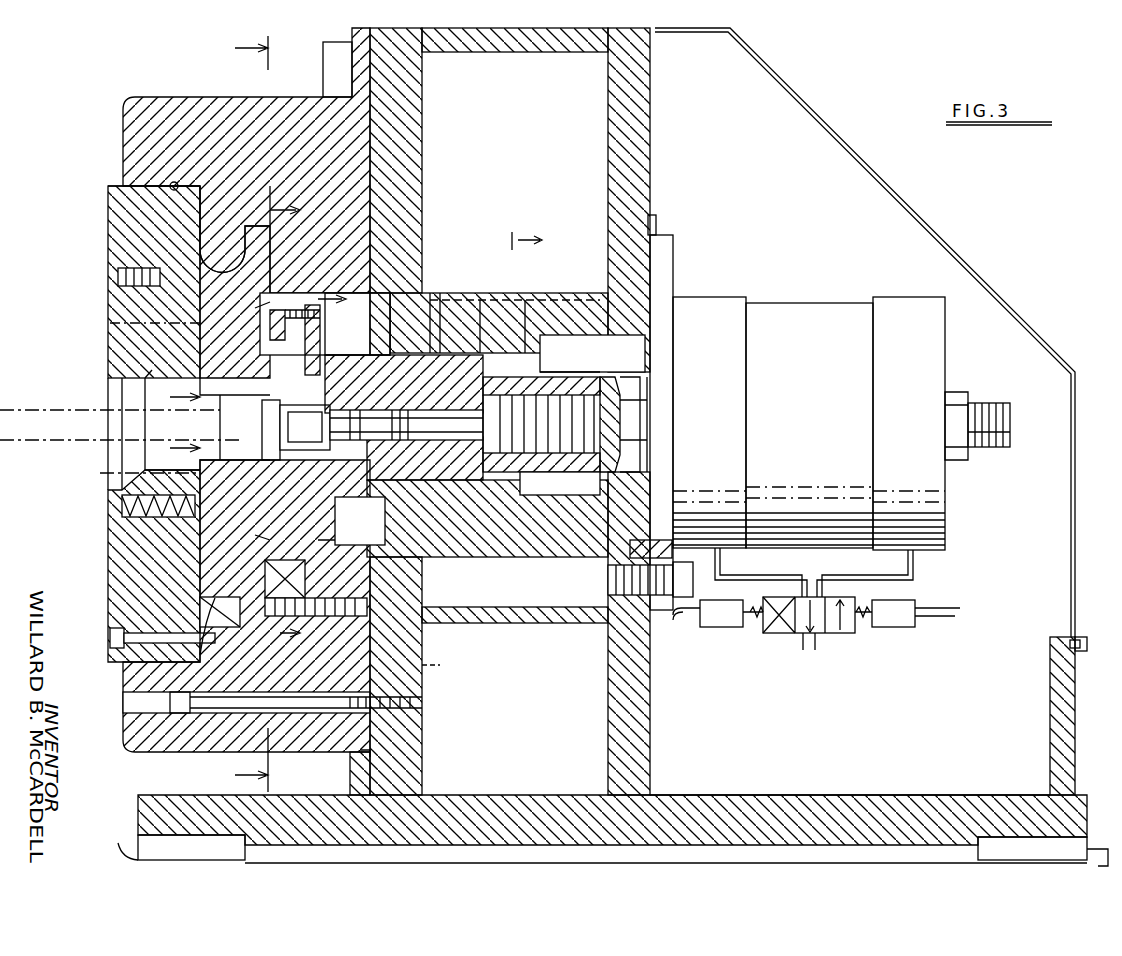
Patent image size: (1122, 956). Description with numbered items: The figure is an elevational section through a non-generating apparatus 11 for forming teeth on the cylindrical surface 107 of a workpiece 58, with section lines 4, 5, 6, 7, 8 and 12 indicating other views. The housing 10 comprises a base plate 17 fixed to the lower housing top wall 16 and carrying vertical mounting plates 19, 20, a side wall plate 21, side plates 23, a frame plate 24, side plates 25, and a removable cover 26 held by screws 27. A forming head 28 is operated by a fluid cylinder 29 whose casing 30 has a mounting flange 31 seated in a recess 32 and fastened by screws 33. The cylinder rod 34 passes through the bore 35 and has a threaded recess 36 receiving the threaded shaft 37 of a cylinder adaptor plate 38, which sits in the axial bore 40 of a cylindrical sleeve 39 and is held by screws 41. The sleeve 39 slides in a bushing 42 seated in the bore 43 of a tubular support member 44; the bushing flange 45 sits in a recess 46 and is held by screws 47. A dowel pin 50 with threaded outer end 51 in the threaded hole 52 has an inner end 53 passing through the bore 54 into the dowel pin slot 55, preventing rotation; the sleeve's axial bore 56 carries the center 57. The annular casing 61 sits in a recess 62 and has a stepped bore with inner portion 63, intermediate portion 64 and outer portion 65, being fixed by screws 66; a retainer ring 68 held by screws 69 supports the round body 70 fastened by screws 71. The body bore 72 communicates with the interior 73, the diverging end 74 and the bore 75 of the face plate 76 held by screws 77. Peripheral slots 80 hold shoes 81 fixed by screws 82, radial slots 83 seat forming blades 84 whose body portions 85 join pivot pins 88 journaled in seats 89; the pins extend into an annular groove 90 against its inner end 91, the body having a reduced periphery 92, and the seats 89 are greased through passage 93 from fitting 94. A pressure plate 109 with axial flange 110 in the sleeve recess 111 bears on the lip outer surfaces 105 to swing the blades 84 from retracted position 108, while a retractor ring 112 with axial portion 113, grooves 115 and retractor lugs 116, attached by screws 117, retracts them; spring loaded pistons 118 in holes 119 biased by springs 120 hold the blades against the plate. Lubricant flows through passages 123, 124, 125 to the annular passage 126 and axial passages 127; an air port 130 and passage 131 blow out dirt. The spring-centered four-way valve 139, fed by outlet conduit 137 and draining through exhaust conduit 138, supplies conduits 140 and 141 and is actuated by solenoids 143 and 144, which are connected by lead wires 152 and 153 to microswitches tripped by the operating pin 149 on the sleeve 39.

The section line 4- 4 is at (236, 414).
The section line 5- 5 is at (292, 422).
The section line 6- 6 is at (337, 419).
The section line 7- 7 is at (255, 419).
The section line 8- 8 is at (330, 442).
The housing 10 is at (130, 815).
The non-generating apparatus 11 is at (113, 147).
The section line 12- 12 is at (212, 424).
The lower housing portion top wall 16 is at (118, 845).
The base plate 17 is at (797, 808).
The vertical mounting plate 19 is at (400, 770).
The vertical mounting plate 20 is at (640, 765).
The side wall plate 21 is at (296, 190).
The vertical side plate 23 is at (610, 718).
The vertical frame plate 24 is at (1050, 722).
The side plate 25 is at (1070, 620).
The removable cover 26 is at (1077, 518).
The screw 27 is at (1080, 645).
The forming head 28 is at (100, 189).
The fluid cylinder 29 is at (834, 304).
The casing 30 is at (768, 320).
The mounting flange 31 is at (665, 262).
The recess 32 is at (656, 225).
The screw 33 is at (608, 578).
The cylinder rod 34 is at (630, 437).
The bore 35 is at (630, 560).
The threaded recess 36 is at (625, 400).
The threaded shaft 37 is at (615, 351).
The cylinder adaptor plate 38 is at (480, 425).
The cylindrical sleeve 39 is at (470, 293).
The axial bore 40 is at (583, 365).
The screw 41 is at (367, 425).
The bushing 42 is at (482, 300).
The bore 43 is at (560, 300).
The tubular support member 44 is at (580, 300).
The flange 45 is at (360, 519).
The recess 46 is at (440, 285).
The screw 47 is at (400, 520).
The dowel pin 50 is at (472, 580).
The threaded outer end 51 is at (504, 566).
The threaded hole 52 is at (467, 564).
The inner end 53 is at (443, 564).
The bore 54 is at (490, 522).
The dowel pin slot 55 is at (420, 488).
The axial bore 56 is at (396, 425).
The center 57 is at (305, 427).
The workpiece 58 is at (26, 405).
The annular casing 61 is at (158, 110).
The recess 62 is at (350, 92).
The inner bore portion 63 is at (366, 268).
The intermediate stepped bore portion 64 is at (355, 235).
The outer bore portion 65 is at (174, 182).
The screw 66 is at (422, 704).
The retainer ring 68 is at (345, 260).
The screw 69 is at (424, 628).
The round body 70 is at (140, 210).
The screw 71 is at (108, 583).
The axial bore 72 is at (150, 380).
The interior 73 is at (300, 245).
The bore outer end portion 74 is at (118, 368).
The bore 75 is at (110, 365).
The face plate 76 is at (118, 301).
The screw 77 is at (118, 273).
The slot 80 is at (115, 612).
The shoe 81 is at (221, 700).
The screw 82 is at (118, 680).
The radial slot 83 is at (160, 552).
The forming blade 84 is at (150, 382).
The body portion 85 is at (150, 535).
The pivot pin 88 is at (233, 604).
The seat 89 is at (200, 655).
The annular groove 90 is at (235, 218).
The inner end 91 is at (215, 244).
The reduced periphery 92 is at (266, 226).
The grease passage 93 is at (112, 660).
The grease fitting 94 is at (110, 636).
The outer surface 105 is at (272, 360).
The cylindrical surface 107 is at (222, 425).
The retracted position 108 is at (110, 322).
The pressure plate 109 is at (289, 579).
The axial flange 110 is at (409, 458).
The axial recess 111 is at (404, 384).
The retractor ring 112 is at (268, 524).
The axially extended portion 113 is at (350, 240).
The groove 115 is at (268, 332).
The retractor lug 116 is at (268, 346).
The screw 117 is at (268, 318).
The spring loaded piston 118 is at (212, 500).
The hole 119 is at (122, 498).
The spring 120 is at (108, 524).
The fluid passage 123 is at (526, 300).
The passage 124 is at (591, 353).
The passage 125 is at (458, 265).
The annular passage 126 is at (255, 430).
The axial passage 127 is at (288, 426).
The air port 130 is at (335, 758).
The passage 131 is at (445, 666).
The outlet conduit 137 is at (822, 645).
The exhaust conduit 138 is at (800, 645).
The flow control valve 139 is at (836, 605).
The conduit 140 is at (776, 583).
The conduit 141 is at (862, 584).
The solenoid 143 is at (726, 628).
The solenoid 144 is at (914, 632).
The operating pin 149 is at (487, 514).
The lead wires 152 is at (958, 612).
The lead wires 153 is at (684, 626).